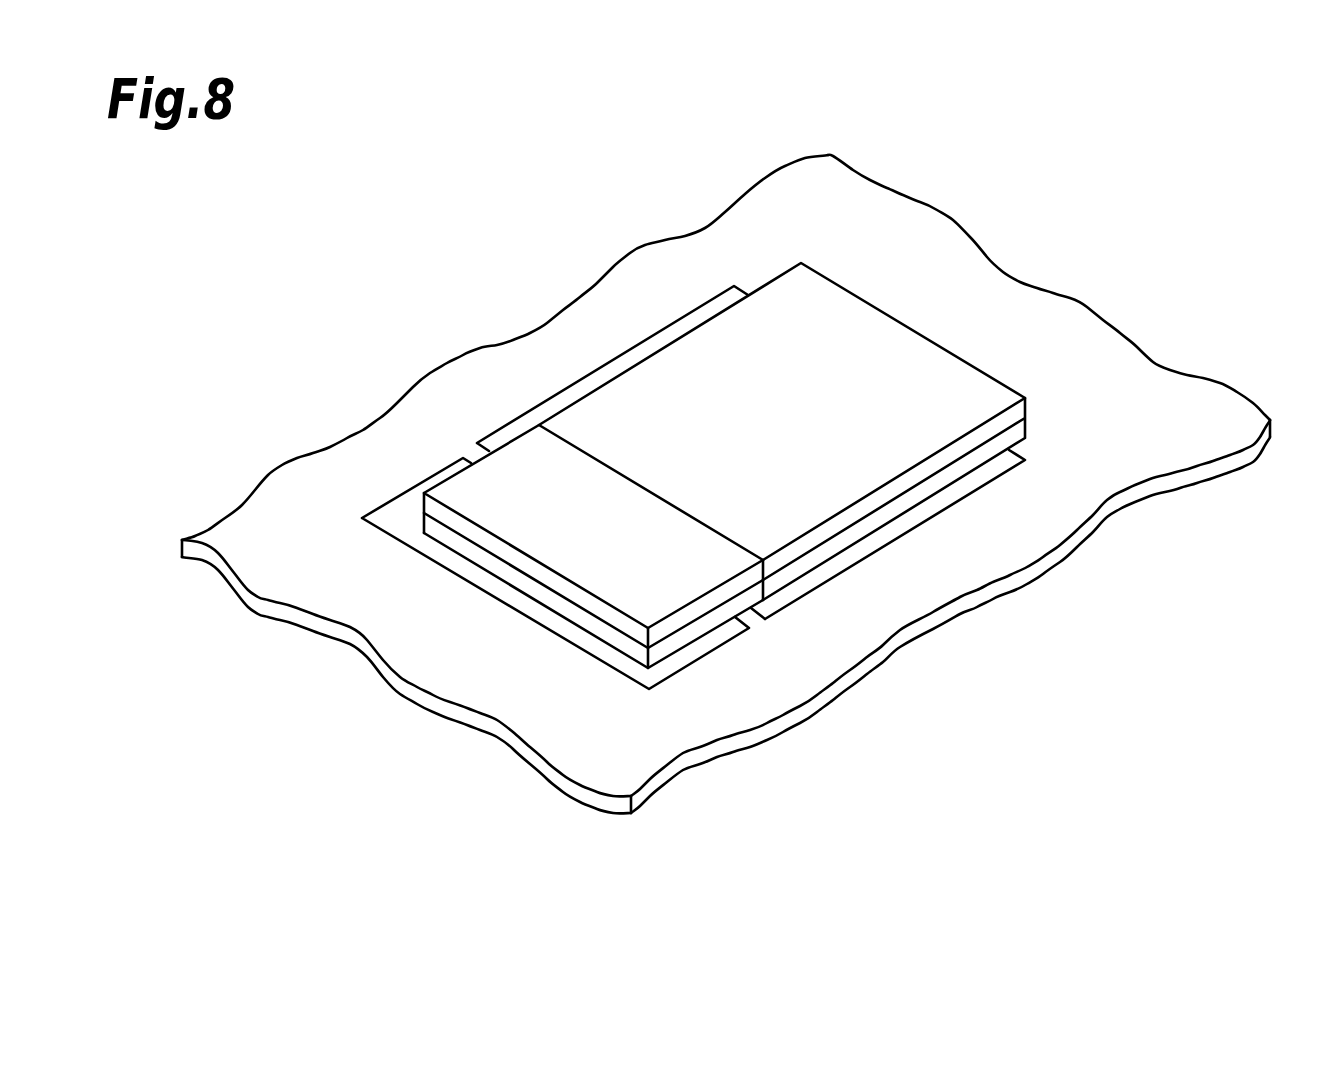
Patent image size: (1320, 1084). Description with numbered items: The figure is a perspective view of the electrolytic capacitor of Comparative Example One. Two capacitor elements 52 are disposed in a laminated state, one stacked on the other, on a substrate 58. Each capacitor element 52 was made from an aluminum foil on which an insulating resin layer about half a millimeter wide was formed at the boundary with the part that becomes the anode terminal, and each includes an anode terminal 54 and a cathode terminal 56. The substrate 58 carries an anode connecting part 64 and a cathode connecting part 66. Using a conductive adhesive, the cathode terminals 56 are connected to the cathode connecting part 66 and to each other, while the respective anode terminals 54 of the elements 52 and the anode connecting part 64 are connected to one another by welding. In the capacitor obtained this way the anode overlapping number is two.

The capacitor element 52 is at (1040, 432).
The anode terminal 54 is at (558, 533).
The cathode terminal 56 is at (920, 437).
The substrate 58 is at (792, 680).
The anode connecting part 64 is at (667, 668).
The cathode connecting part 66 is at (867, 548).